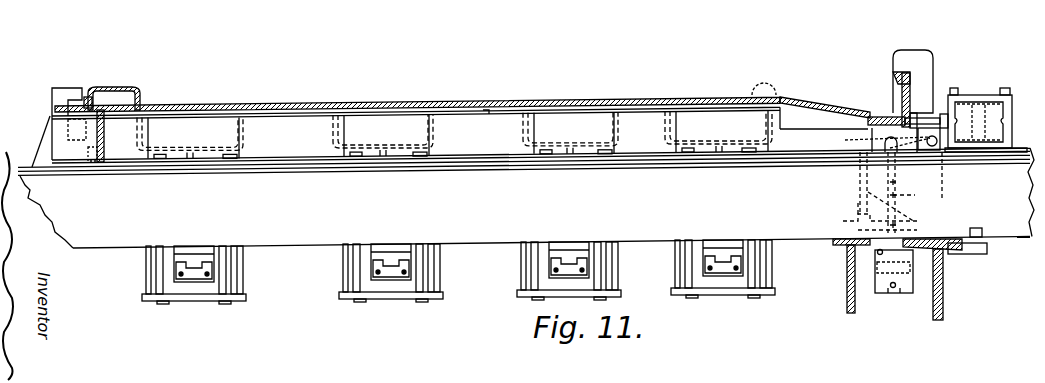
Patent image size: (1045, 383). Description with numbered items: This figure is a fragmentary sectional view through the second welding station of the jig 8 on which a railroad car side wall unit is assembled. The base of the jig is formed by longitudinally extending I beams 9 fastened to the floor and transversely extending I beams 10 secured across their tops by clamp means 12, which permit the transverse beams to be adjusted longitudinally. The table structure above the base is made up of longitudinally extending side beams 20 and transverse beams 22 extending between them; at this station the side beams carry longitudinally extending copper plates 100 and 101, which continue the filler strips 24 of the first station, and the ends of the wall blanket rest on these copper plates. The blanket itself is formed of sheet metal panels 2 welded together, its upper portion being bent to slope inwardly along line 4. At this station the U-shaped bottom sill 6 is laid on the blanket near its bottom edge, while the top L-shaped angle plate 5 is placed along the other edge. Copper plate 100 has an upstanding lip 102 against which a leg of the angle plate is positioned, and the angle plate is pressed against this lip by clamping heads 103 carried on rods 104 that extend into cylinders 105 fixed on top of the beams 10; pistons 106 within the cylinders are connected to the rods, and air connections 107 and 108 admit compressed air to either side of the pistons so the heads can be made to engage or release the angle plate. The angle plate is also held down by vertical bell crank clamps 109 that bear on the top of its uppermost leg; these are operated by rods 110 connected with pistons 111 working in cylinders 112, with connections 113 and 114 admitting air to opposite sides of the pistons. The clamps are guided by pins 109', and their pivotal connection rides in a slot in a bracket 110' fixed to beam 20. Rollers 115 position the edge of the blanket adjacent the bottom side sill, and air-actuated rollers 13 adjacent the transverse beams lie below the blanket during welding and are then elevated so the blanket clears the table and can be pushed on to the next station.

The sheet metal panels 2 is at (489, 112).
The bend line 4 is at (785, 100).
The top L-shaped angle plate 5 is at (893, 80).
The U-shaped bottom sill 6 is at (120, 87).
The jig 8 is at (313, 249).
The longitudinal I beams 9 is at (847, 283).
The transverse I beams 10 is at (498, 227).
The clamp means 12 is at (984, 254).
The rollers 13 is at (205, 125).
The longitudinal side beams 20 is at (860, 172).
The transverse table beams 22 is at (292, 128).
The filler strips 24 is at (486, 113).
The copper plate 100 is at (880, 124).
The copper plate 101 is at (60, 108).
The upstanding lip 102 is at (868, 118).
The clamping heads 103 is at (922, 112).
The rods 104 is at (940, 117).
The cylinders 105 is at (967, 103).
The pistons 106 is at (982, 97).
The air connection 107 is at (1008, 93).
The air connection 108 is at (954, 93).
The vertical clamps 109 is at (921, 75).
The guide pins 109' is at (947, 163).
The rods 110 is at (888, 202).
The bracket 110' is at (921, 200).
The pistons 111 is at (894, 288).
The cylinders 112 is at (883, 293).
The air connection 113 is at (895, 297).
The air connection 114 is at (877, 253).
The rollers 115 is at (96, 109).